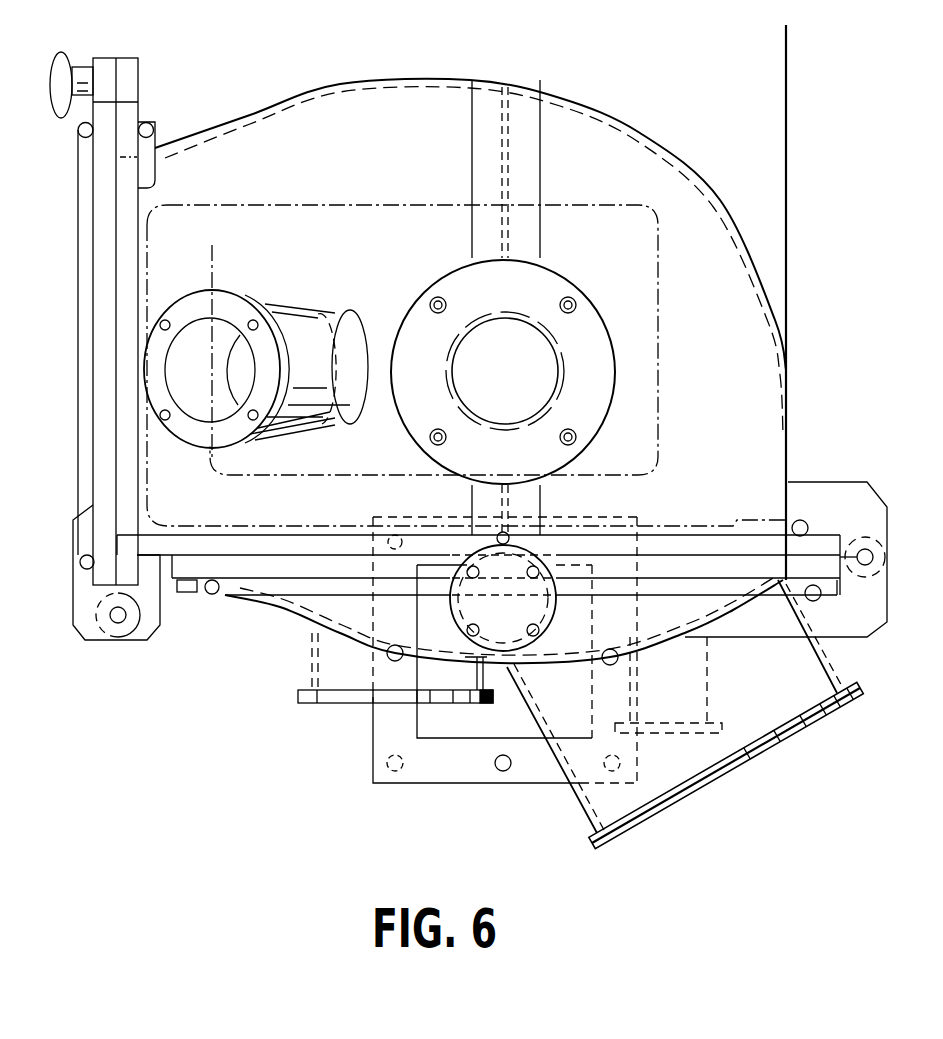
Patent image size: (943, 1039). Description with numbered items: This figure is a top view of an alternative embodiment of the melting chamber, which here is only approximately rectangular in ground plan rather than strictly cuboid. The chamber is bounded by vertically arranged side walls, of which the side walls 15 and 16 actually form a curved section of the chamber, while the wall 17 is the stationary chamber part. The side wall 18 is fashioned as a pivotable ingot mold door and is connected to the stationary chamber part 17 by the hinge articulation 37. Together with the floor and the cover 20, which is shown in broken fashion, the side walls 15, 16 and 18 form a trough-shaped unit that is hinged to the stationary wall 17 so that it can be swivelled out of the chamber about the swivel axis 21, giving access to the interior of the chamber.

The side wall 15 is at (450, 80).
The side wall 16 is at (790, 398).
The stationary wall 17 is at (270, 612).
The side wall 18 is at (77, 333).
The cover 20 is at (388, 176).
The swivel axis 21 is at (888, 535).
The hinge articulation 37 is at (147, 645).